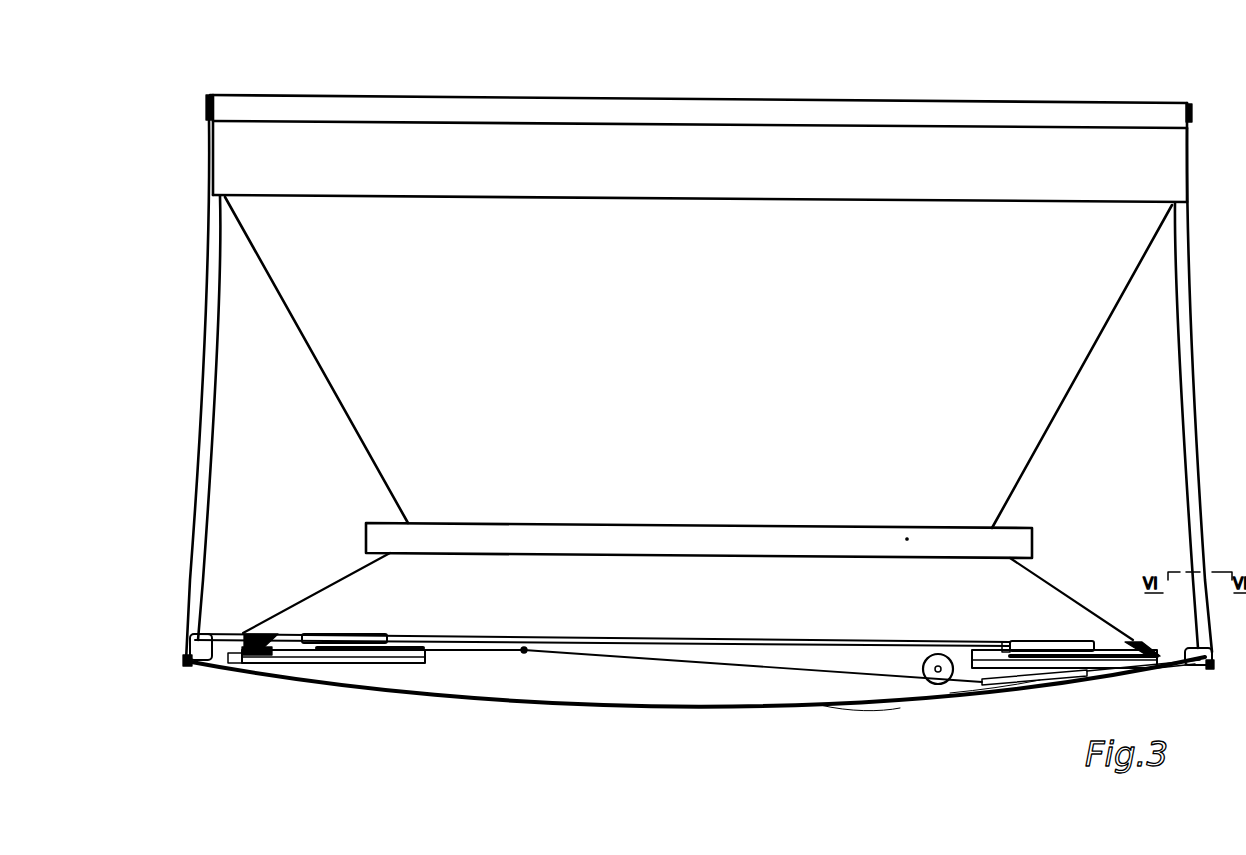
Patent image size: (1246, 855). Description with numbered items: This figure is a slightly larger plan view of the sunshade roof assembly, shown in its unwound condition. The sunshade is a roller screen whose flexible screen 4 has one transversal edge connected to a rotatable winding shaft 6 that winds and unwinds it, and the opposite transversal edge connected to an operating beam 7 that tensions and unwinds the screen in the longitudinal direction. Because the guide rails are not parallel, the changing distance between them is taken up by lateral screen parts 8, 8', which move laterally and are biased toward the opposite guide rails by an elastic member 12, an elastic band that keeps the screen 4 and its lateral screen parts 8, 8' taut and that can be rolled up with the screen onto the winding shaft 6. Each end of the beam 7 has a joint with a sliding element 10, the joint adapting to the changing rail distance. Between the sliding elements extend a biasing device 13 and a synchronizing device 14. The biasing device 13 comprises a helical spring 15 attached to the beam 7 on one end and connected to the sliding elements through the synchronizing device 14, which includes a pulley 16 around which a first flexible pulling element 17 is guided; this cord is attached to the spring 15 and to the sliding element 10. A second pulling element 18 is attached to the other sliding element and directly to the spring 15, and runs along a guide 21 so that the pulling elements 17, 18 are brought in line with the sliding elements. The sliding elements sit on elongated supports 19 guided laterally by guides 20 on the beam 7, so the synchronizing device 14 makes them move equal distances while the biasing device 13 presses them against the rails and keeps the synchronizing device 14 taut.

The flexible screen 4 is at (714, 269).
The winding shaft 6 is at (1190, 112).
The operating beam 7 is at (745, 697).
The lateral screen part 8 is at (1082, 430).
The lateral screen part 8' is at (316, 423).
The sliding element 10 is at (1211, 646).
The elastic member 12 is at (598, 540).
The biasing device 13 is at (997, 710).
The synchronizing device 14 is at (872, 715).
The helical spring 15 is at (1047, 690).
The pulley 16 is at (938, 686).
The first flexible pulling element 17 is at (1186, 667).
The second pulling element 18 is at (672, 663).
The elongated support 19 is at (380, 660).
The guide 20 is at (322, 641).
The guide 21 is at (524, 654).